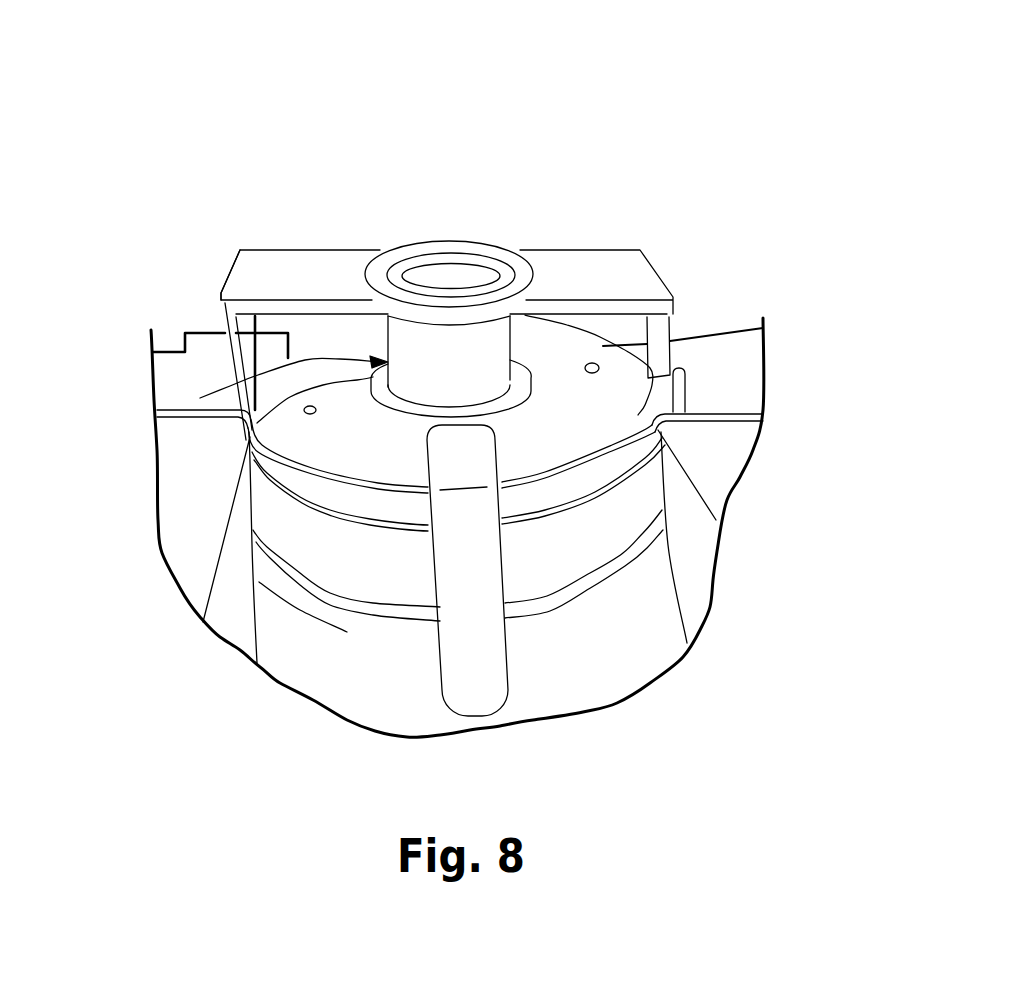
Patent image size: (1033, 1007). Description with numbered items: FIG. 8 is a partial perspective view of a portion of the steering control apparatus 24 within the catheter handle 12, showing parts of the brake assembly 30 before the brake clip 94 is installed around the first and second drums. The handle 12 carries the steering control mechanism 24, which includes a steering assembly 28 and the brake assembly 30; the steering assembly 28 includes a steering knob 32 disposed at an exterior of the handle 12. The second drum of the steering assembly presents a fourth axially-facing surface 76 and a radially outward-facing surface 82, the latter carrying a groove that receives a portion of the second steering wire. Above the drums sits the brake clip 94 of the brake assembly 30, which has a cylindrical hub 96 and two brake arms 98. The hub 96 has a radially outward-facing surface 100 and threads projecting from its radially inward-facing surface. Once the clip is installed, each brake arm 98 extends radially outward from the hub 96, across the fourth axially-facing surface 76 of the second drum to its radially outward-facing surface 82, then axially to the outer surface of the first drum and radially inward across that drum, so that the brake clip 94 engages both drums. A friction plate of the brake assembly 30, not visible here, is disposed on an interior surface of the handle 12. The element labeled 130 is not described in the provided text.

The handle 12 is at (338, 499).
The steering control mechanism 24 is at (597, 90).
The steering assembly 28 is at (710, 443).
The brake assembly 30 is at (319, 173).
The steering knob 32 is at (476, 692).
The fourth axially-facing surface 76 is at (537, 450).
The radially outward-facing surface 82 is at (372, 485).
The brake clip 94 is at (252, 251).
The cylindrical hub 96 is at (388, 317).
The brake arm 98 is at (233, 353).
The radially outward-facing surface 100 is at (252, 432).
The plate corner 130 is at (222, 293).